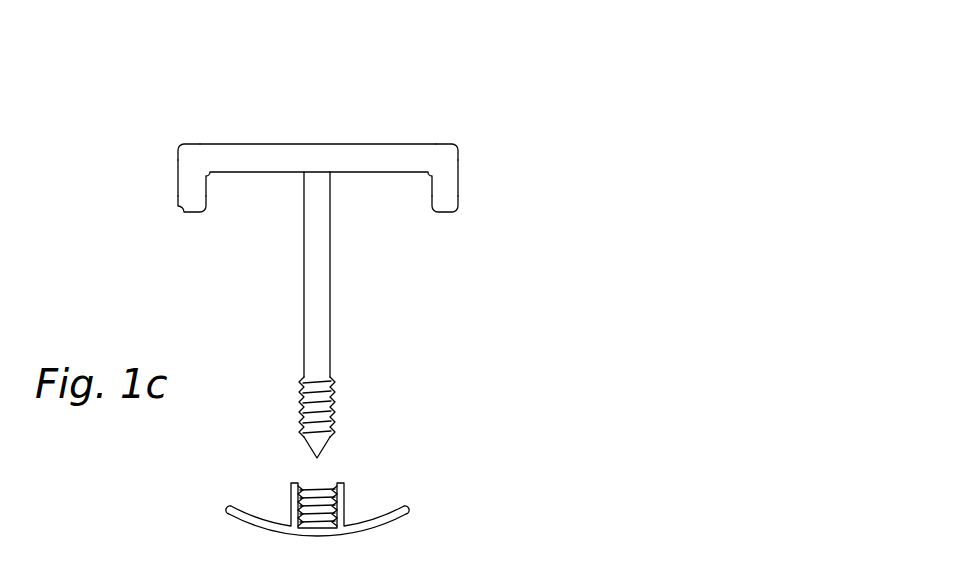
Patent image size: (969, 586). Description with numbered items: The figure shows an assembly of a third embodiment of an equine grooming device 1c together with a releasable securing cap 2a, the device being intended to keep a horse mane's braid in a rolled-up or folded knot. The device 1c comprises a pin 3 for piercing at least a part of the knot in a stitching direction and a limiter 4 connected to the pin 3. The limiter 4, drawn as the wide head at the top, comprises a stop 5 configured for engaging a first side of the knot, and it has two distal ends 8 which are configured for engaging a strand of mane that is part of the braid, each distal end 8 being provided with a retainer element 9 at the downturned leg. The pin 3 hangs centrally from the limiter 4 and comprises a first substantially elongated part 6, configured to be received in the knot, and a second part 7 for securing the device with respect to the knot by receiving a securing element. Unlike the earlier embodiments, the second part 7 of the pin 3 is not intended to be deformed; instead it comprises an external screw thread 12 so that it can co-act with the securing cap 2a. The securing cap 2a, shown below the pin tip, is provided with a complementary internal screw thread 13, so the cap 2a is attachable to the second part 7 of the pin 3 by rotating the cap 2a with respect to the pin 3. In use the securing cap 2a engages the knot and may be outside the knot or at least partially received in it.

The equine grooming device 1c is at (525, 73).
The securing cap 2a is at (413, 510).
The pin 3 is at (336, 307).
The limiter 4 is at (389, 139).
The stop 5 is at (292, 178).
The first substantially elongated part 6 is at (297, 185).
The second part 7 is at (340, 414).
The distal ends 8 is at (174, 145).
The retainer element 9 is at (175, 211).
The external screw thread 12 is at (341, 403).
The internal screw thread 13 is at (325, 486).